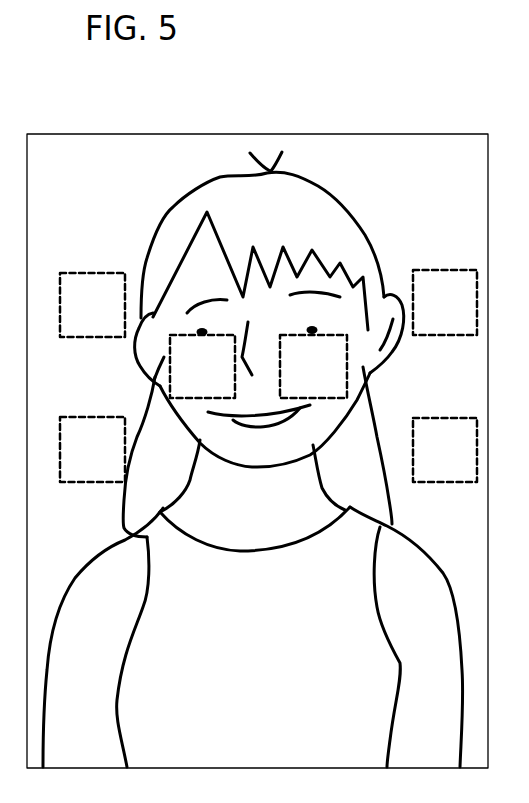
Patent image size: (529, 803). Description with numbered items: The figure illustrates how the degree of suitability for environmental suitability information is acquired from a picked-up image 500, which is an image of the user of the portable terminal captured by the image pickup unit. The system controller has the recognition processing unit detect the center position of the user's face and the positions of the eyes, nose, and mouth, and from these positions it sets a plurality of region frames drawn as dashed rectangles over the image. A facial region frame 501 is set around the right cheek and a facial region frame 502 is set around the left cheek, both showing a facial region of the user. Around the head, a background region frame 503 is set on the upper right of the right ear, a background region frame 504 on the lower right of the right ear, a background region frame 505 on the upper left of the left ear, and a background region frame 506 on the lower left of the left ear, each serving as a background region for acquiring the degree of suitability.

The picked-up image 500 is at (375, 134).
The facial region frame 501 is at (202, 366).
The facial region frame 502 is at (313, 366).
The background region frame 503 is at (92, 305).
The background region frame 504 is at (92, 449).
The background region frame 505 is at (445, 302).
The background region frame 506 is at (445, 450).